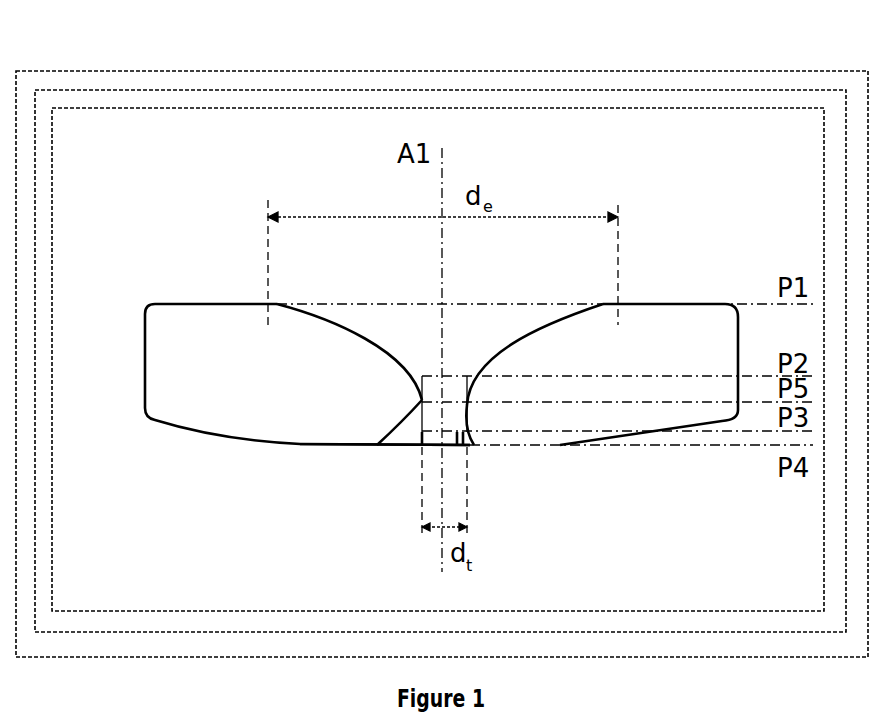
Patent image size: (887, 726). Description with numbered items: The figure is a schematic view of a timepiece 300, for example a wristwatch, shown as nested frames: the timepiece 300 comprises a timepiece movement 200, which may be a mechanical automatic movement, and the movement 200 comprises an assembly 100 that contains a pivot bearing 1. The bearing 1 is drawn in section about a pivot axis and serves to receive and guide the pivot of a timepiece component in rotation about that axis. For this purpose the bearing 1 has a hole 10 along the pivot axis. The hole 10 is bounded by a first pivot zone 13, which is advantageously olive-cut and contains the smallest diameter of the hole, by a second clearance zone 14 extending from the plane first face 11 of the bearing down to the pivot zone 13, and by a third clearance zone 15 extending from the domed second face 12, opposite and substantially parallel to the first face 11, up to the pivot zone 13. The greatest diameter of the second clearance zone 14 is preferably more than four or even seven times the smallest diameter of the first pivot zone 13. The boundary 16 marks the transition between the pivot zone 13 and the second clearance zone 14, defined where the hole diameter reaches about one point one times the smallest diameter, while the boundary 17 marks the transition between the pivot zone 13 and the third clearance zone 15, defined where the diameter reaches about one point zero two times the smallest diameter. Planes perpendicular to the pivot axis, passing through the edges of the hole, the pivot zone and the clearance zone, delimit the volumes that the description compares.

The pivot bearing 1 is at (436, 390).
The hole 10 is at (483, 325).
The first face 11 is at (232, 303).
The second face 12 is at (283, 446).
The first pivot zone 13 is at (459, 381).
The second clearance zone 14 is at (397, 323).
The third clearance zone 15 is at (431, 448).
The boundary between first pivot zone and second clearance zone 16 is at (380, 444).
The boundary between first pivot zone and third clearance zone 17 is at (463, 450).
The assembly 100 is at (255, 108).
The timepiece movement 200 is at (328, 90).
The timepiece 300 is at (403, 71).